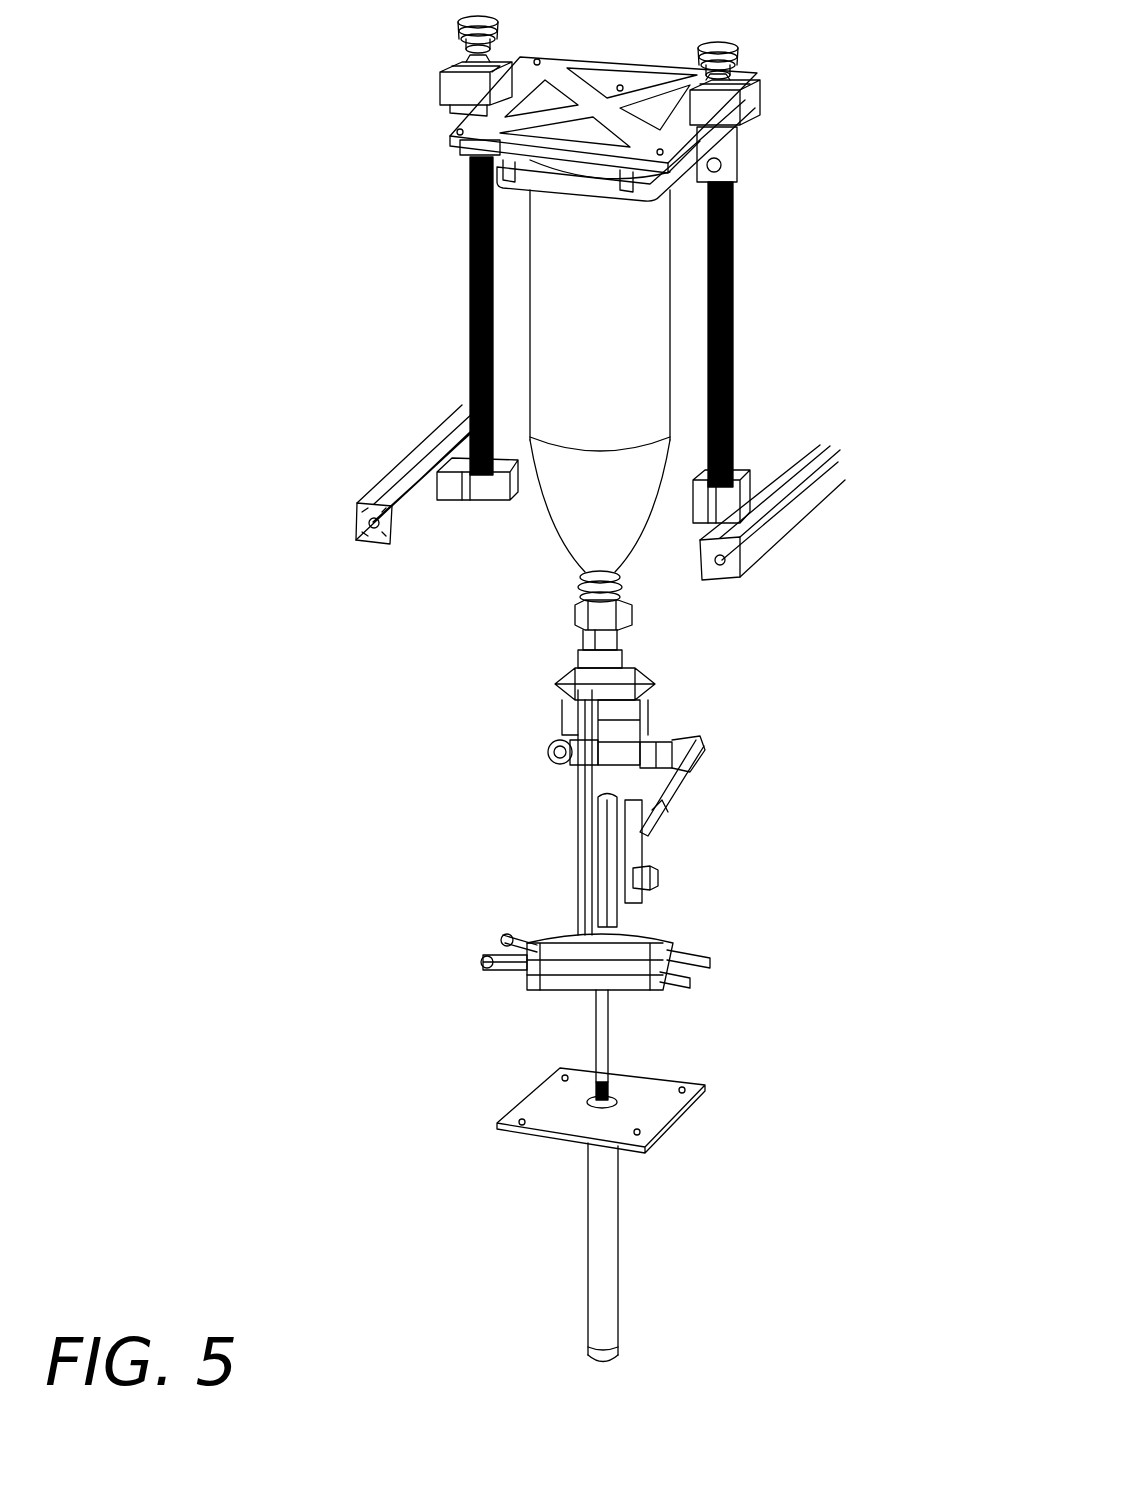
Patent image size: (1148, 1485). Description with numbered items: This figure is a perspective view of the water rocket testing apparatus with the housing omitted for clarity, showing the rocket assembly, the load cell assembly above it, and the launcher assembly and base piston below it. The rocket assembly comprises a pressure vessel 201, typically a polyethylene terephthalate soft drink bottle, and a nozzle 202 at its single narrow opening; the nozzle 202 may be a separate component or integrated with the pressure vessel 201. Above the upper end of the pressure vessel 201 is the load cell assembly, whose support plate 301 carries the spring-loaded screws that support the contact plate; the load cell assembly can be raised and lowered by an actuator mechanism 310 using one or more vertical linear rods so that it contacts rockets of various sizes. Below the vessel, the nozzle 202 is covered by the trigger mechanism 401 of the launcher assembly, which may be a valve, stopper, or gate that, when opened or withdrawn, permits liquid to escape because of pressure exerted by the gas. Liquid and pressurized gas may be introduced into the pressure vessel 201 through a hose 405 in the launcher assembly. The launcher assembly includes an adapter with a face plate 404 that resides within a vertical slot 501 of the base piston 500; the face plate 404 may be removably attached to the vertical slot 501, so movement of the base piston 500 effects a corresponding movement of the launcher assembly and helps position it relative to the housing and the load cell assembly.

The pressure vessel 201 is at (570, 330).
The nozzle 202 is at (581, 639).
The support plate 301 is at (472, 120).
The actuator mechanism 310 is at (470, 238).
The trigger mechanism 401 is at (653, 670).
The face plate 404 is at (583, 787).
The hose 405 is at (662, 815).
The base piston 500 is at (612, 1047).
The vertical slot 501 is at (657, 885).